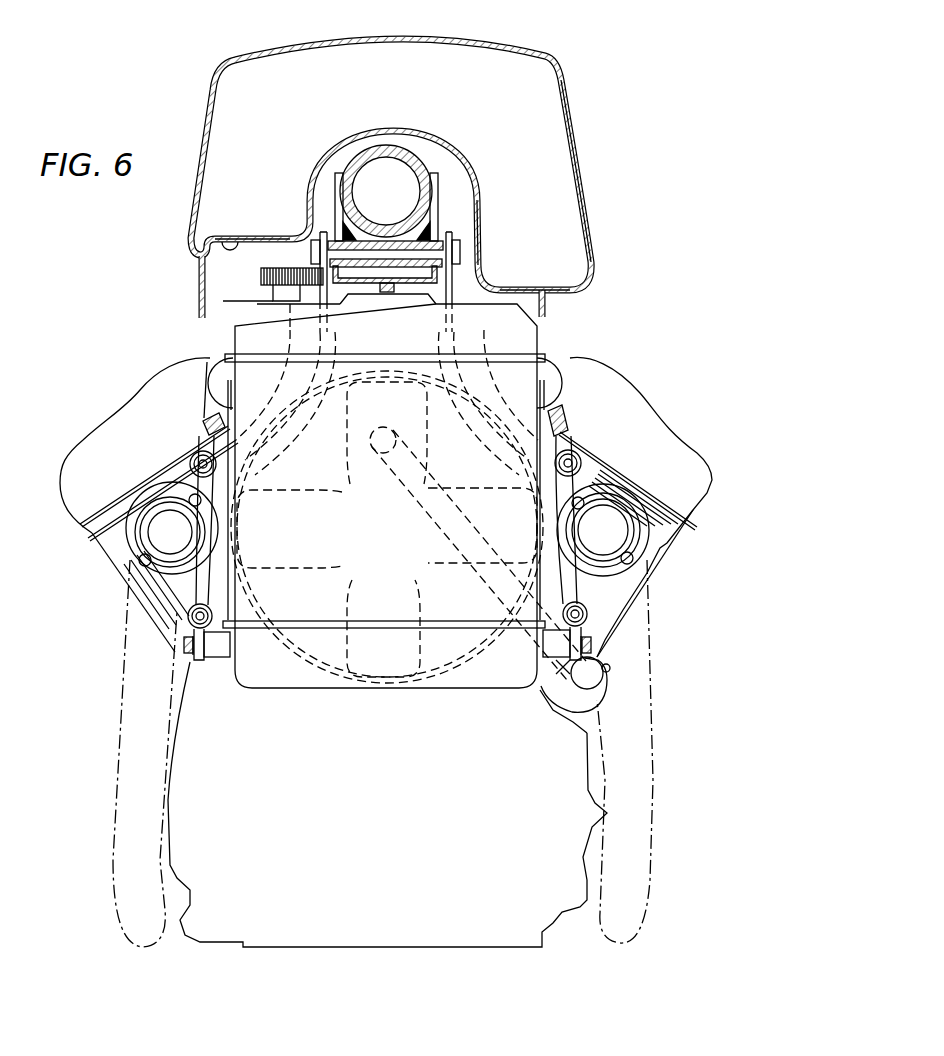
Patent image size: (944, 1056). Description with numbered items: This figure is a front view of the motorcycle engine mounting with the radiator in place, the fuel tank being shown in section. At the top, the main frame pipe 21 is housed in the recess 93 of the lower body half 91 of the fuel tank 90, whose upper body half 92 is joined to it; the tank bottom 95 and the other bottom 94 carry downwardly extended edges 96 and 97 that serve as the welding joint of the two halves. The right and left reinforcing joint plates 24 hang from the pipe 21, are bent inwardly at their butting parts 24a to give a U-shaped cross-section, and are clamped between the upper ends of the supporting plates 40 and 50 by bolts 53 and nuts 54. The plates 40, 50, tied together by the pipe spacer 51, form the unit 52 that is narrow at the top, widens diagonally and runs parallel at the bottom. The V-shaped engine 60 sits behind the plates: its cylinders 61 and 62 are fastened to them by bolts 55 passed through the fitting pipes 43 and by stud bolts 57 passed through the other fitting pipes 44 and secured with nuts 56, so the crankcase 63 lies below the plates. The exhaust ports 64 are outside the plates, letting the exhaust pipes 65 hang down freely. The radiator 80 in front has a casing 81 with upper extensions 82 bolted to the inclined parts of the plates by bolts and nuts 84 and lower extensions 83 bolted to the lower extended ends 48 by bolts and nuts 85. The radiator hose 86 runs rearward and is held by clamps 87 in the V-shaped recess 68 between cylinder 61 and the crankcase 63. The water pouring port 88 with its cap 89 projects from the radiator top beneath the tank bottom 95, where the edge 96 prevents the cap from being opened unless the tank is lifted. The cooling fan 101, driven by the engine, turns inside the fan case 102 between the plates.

The main frame pipe 21 is at (386, 145).
The reinforcing joint plate 24 is at (337, 192).
The butting parts 24a is at (440, 232).
The supporting plate 40 is at (583, 580).
The fitting pipe 43 is at (197, 453).
The fitting pipe 44 is at (187, 641).
The lower extended end 48 is at (203, 662).
The supporting plate 50 is at (192, 483).
The pipe spacer 51 is at (410, 300).
The unit 52 is at (598, 426).
The bolt 53 is at (455, 262).
The nut 54 is at (316, 266).
The bolt 55 is at (190, 463).
The nut 56 is at (182, 624).
The stud bolt 57 is at (206, 614).
The engine 60 is at (130, 432).
The cylinder 61 is at (697, 482).
The cylinder 62 is at (73, 473).
The crankcase 63 is at (563, 897).
The exhaust port 64 is at (167, 537).
The exhaust pipe 65 is at (112, 780).
The V-shaped recess 68 is at (557, 703).
The radiator 80 is at (288, 670).
The casing 81 is at (557, 358).
The upper extension 82 is at (222, 385).
The lower extension 83 is at (221, 650).
The bolts and nuts 84 is at (210, 420).
The bolts and nuts 85 is at (188, 648).
The radiator hose 86 is at (597, 688).
The clamp 87 is at (605, 680).
The water pouring port 88 is at (268, 295).
The cap 89 is at (288, 275).
The fuel tank 90 is at (577, 127).
The lower body half 91 is at (468, 238).
The upper body half 92 is at (588, 183).
The recess 93 is at (390, 276).
The tank bottom 94 is at (540, 288).
The tank bottom 95 is at (240, 234).
The edge 96 is at (199, 308).
The edge 97 is at (549, 306).
The cooling fan 101 is at (388, 678).
The fan case 102 is at (347, 683).